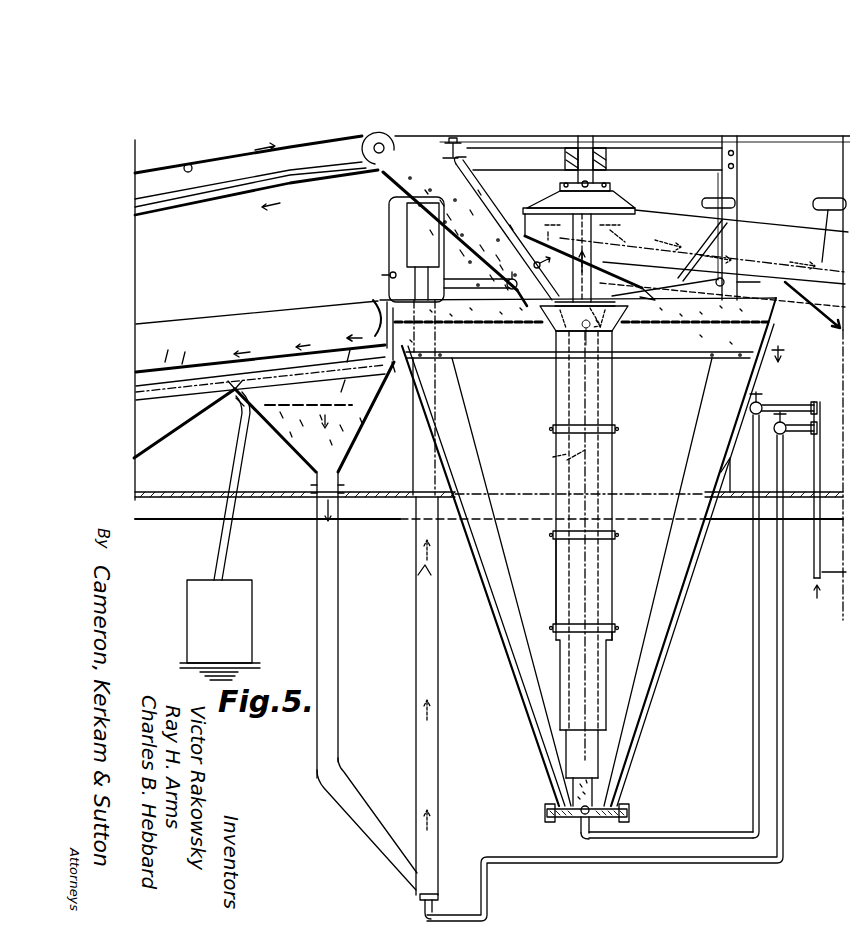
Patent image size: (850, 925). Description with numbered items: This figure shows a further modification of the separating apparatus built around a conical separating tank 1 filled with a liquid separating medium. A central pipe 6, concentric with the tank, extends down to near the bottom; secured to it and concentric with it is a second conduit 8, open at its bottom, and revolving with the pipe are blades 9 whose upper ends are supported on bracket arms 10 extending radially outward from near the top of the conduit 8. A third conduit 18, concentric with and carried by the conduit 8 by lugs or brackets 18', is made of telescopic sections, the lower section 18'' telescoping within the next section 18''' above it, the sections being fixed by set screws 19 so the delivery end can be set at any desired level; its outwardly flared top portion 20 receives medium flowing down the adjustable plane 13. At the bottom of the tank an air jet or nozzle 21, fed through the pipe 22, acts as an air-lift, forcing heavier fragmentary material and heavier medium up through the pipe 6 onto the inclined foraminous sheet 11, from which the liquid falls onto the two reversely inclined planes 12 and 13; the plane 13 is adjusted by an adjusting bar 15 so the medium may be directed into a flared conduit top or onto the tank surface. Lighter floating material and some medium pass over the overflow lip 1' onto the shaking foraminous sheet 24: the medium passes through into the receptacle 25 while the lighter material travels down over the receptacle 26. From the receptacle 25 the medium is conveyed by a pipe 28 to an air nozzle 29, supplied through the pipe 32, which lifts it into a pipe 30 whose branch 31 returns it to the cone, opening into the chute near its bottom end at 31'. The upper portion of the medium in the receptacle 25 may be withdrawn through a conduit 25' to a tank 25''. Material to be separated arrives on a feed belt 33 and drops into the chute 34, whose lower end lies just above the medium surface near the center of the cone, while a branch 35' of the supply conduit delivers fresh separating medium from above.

The separating tank 1 is at (588, 565).
The overflow lip 1' is at (370, 321).
The pipe 6 is at (632, 785).
The second conduit 8 is at (570, 472).
The blades 9 is at (486, 446).
The bracket arms 10 is at (511, 358).
The foraminous sheet 11 is at (686, 263).
The inclined plane 12 is at (566, 248).
The inclined plane 13 is at (683, 283).
The adjusting bar 15 is at (700, 266).
The third conduit 18 is at (599, 540).
The lugs or brackets 18' is at (584, 356).
The lower section 18'' is at (567, 648).
The next section 18''' is at (603, 582).
The set screws 19 is at (618, 432).
The outwardly flared top portion 20 is at (620, 322).
The air jet or nozzle 21 is at (576, 822).
The pipe 22 is at (753, 678).
The inclined foraminous sheet 24 is at (285, 348).
The receptacle 25 is at (314, 570).
The conduit 25' is at (240, 486).
The tank or receptacle 25'' is at (234, 630).
The receptacle 26 is at (231, 406).
The pipe 28 is at (368, 838).
The air nozzle or jet 29 is at (420, 899).
The pipe 30 is at (415, 652).
The branch 31 is at (446, 249).
The branch opening 31' is at (507, 272).
The pipe 32 is at (688, 864).
The feed belt 33 is at (190, 166).
The chute 34 is at (394, 176).
The branch 35' is at (484, 219).
The apex of deflector a is at (242, 406).